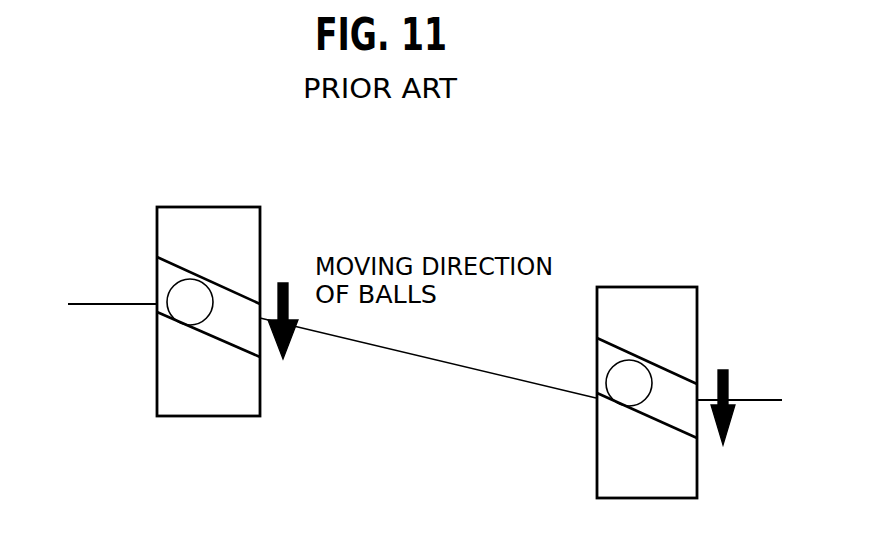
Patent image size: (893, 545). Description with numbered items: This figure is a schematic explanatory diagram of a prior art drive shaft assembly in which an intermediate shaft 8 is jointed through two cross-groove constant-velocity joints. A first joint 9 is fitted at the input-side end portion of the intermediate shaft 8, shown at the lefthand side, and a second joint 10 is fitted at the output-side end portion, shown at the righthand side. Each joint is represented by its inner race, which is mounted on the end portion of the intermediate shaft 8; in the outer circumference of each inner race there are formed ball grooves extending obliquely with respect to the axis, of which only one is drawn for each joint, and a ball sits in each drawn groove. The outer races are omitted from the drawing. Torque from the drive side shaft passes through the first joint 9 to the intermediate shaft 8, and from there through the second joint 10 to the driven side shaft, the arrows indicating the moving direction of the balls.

The intermediate shaft 8 is at (433, 360).
The first joint 9 is at (184, 280).
The second joint 10 is at (672, 360).